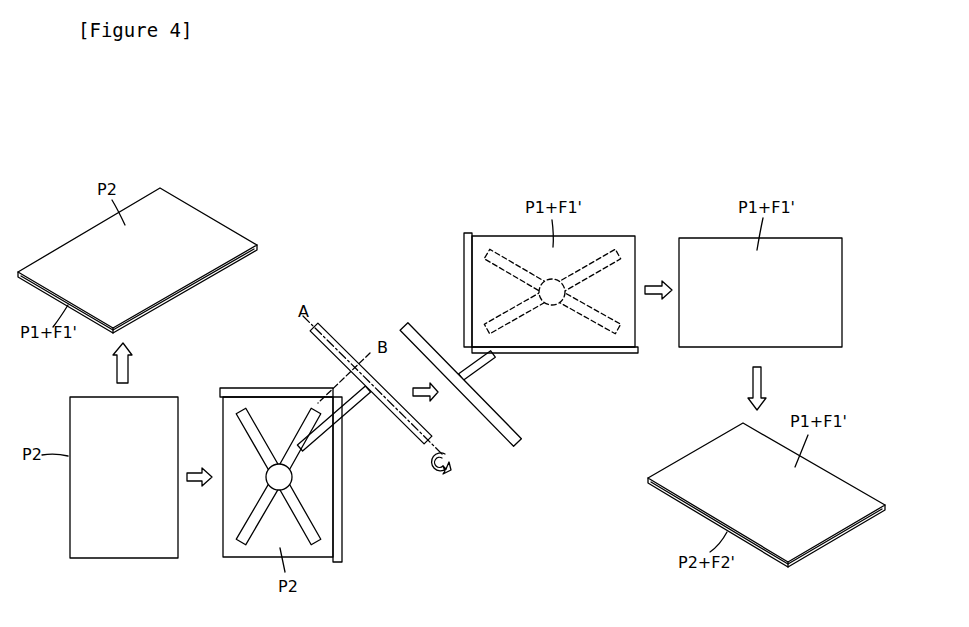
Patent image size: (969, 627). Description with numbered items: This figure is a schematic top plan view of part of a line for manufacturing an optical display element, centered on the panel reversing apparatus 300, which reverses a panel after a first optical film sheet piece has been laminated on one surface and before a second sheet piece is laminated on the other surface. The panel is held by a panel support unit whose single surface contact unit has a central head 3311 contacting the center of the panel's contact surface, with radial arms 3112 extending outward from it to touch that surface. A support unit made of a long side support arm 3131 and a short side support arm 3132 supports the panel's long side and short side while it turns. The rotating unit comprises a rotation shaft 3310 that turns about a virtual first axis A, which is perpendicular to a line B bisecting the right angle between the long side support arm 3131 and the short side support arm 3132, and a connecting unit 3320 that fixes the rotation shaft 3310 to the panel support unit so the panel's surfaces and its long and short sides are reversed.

The panel reversing apparatus 300 is at (440, 524).
The radial arms 3112 is at (243, 542).
The long side support arm 3131 is at (341, 518).
The short side support arm 3132 is at (272, 388).
The rotation shaft 3310 is at (500, 432).
The rotation shaft 3311 is at (267, 470).
The connecting unit 3320 is at (352, 415).